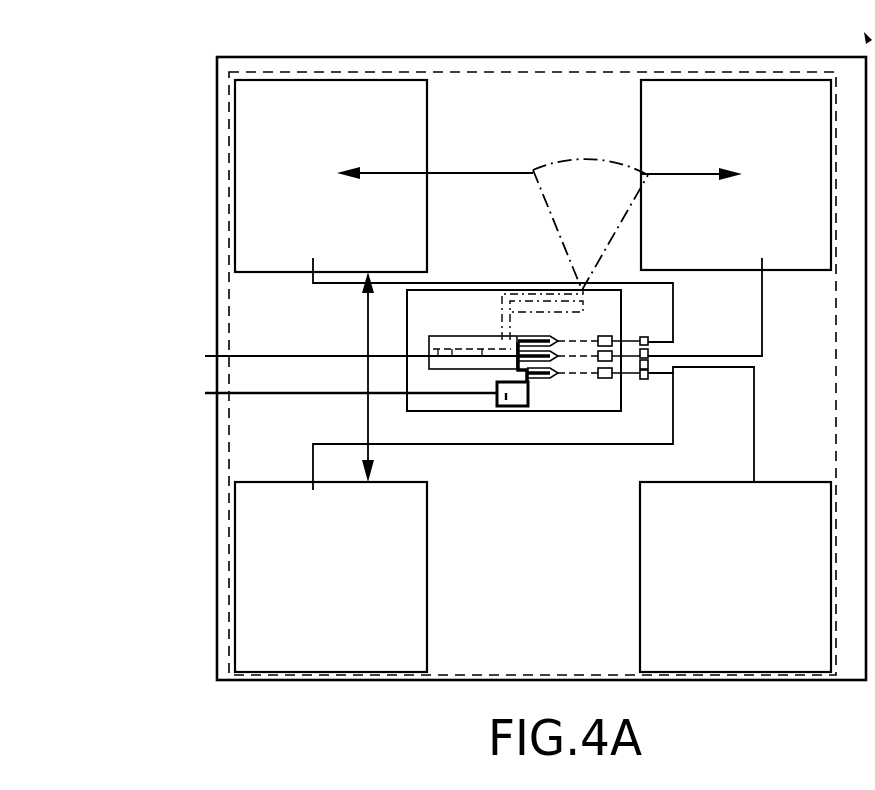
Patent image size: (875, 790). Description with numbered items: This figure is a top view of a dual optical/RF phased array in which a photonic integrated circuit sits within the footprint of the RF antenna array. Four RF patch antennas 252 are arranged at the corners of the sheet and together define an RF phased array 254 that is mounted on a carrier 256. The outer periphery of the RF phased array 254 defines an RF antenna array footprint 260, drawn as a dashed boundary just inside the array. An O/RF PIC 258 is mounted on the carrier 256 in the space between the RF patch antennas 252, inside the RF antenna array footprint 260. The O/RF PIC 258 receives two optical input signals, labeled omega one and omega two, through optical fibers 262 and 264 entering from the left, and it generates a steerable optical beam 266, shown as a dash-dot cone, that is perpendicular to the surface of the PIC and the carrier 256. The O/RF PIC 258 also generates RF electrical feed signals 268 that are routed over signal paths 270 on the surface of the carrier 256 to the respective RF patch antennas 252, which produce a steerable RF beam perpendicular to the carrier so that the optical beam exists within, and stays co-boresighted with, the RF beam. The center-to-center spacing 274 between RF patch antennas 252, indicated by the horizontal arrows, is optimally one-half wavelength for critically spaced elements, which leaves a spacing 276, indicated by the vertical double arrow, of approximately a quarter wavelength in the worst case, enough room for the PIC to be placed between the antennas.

The RF patch antenna 252 is at (808, 124).
The RF phased array 254 is at (217, 92).
The carrier 256 is at (814, 330).
The O/RF PIC 258 is at (472, 336).
The RF antenna array footprint 260 is at (232, 290).
The optical fiber 262 is at (208, 356).
The optical fiber 264 is at (208, 393).
The steerable optical beam 266 is at (603, 205).
The RF electrical feed signals 268 is at (666, 305).
The signal paths 270 is at (673, 398).
The center-to-center spacing 274 is at (456, 173).
The spacing 276 is at (366, 310).